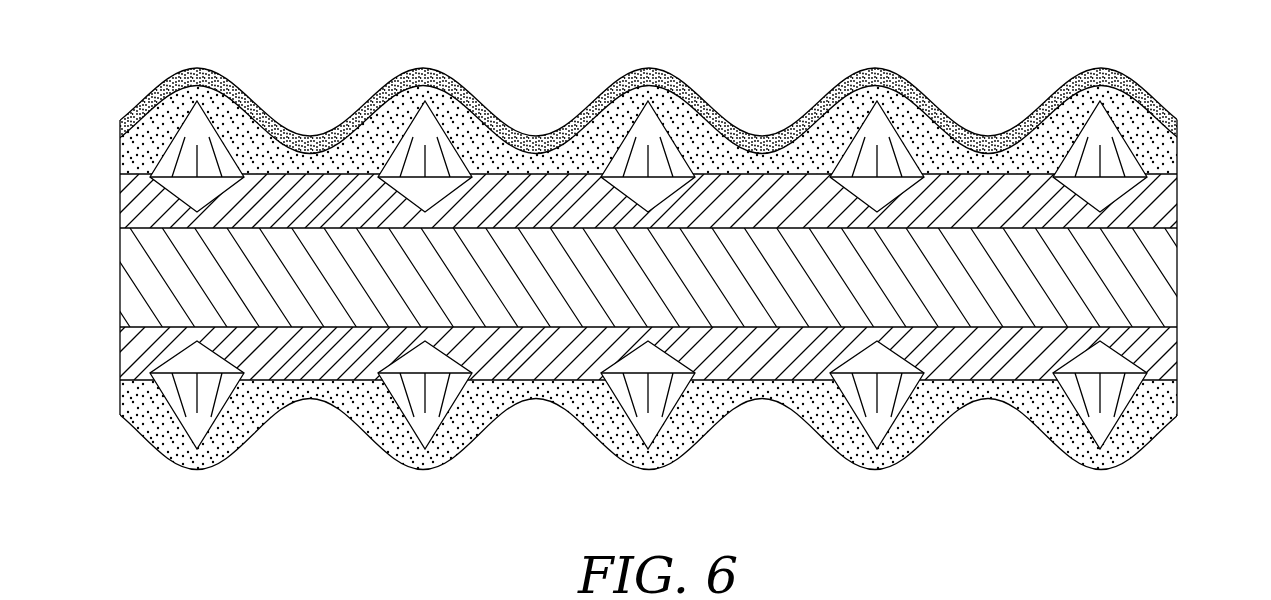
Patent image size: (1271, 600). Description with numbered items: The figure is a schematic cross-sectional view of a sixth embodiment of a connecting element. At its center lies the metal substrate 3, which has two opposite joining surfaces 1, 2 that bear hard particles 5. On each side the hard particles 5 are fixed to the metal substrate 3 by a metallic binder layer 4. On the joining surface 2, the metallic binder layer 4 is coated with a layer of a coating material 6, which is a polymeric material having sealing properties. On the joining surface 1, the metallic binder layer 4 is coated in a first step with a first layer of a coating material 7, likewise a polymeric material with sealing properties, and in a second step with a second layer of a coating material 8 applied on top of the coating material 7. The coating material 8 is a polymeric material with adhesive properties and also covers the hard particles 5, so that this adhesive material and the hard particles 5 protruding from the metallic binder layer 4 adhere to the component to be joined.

The joining surface 1 is at (703, 98).
The joining surface 2 is at (705, 435).
The metal substrate 3 is at (1148, 283).
The metallic binder layer 4 is at (1167, 200).
The hard particles 5 is at (1103, 123).
The coating material 6 is at (137, 400).
The coating material 7 is at (137, 148).
The coating material 8 is at (140, 103).